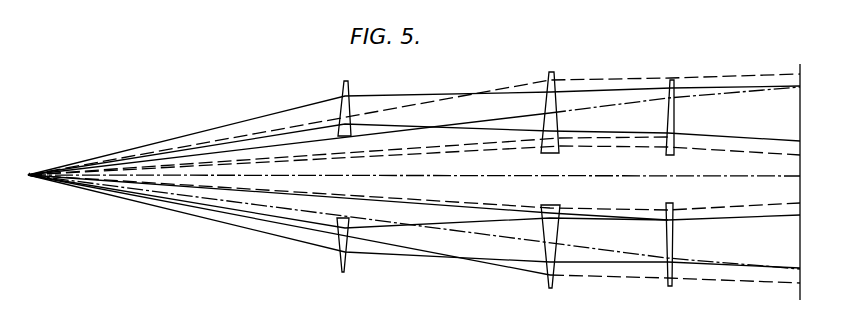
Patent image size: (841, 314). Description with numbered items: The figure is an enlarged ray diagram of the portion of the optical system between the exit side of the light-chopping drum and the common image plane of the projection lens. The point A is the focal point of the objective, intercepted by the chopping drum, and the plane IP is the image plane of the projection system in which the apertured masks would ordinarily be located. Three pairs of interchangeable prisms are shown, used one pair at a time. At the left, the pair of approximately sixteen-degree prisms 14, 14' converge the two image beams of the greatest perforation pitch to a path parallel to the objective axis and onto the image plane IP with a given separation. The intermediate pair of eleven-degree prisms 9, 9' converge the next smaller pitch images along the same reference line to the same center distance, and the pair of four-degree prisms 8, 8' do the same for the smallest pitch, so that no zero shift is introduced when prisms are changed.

The focal point A is at (28, 163).
The image plane IP is at (798, 174).
The prism 14 is at (329, 106).
The prism 14' is at (323, 251).
The prism 9 is at (550, 94).
The prism 9' is at (541, 258).
The prism 8 is at (674, 104).
The prism 8' is at (681, 255).